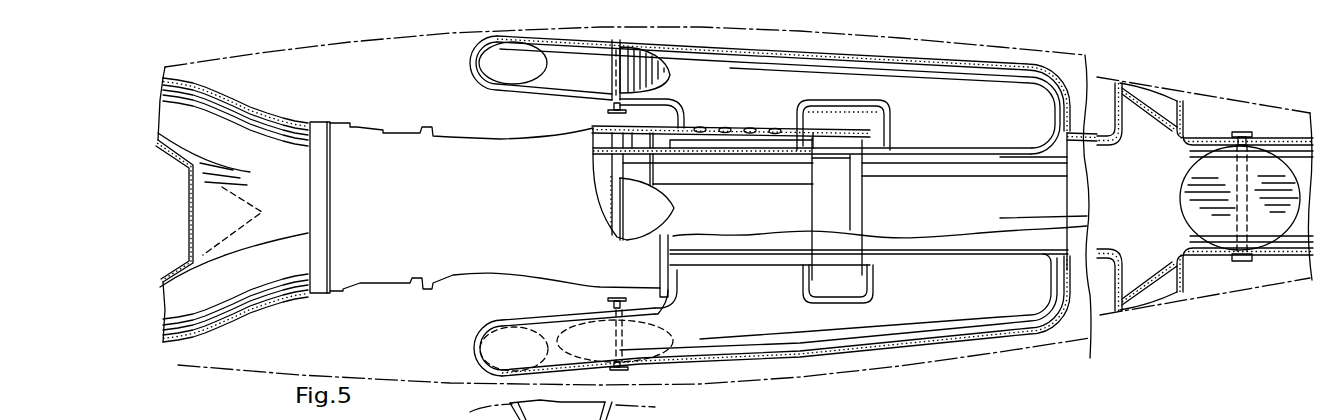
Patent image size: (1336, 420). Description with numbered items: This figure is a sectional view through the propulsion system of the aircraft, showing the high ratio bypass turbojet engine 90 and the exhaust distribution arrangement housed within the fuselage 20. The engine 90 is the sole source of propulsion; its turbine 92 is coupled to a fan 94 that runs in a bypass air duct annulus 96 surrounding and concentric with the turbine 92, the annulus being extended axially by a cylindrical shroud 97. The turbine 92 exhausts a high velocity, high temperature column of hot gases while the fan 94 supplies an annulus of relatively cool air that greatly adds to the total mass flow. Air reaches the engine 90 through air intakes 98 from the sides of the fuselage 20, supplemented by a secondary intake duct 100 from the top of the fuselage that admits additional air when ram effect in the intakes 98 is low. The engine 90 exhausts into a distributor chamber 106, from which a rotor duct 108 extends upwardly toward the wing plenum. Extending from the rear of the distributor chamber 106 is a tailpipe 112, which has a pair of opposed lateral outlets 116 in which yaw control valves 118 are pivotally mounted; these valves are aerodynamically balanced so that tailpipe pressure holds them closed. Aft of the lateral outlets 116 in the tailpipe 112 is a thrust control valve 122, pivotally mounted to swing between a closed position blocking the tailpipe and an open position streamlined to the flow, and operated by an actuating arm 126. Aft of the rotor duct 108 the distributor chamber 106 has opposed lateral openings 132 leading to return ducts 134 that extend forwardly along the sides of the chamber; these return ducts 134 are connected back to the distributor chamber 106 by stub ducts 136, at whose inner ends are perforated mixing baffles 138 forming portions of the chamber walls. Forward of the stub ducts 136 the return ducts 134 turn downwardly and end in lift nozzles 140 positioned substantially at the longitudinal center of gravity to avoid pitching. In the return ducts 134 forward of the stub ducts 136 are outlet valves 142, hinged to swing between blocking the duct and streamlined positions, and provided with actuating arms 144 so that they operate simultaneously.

The fuselage 20 is at (972, 40).
The high ratio bypass turbojet engine 90 is at (383, 283).
The turbine 92 is at (607, 168).
The fan 94 is at (602, 147).
The bypass air duct annulus 96 is at (660, 142).
The cylindrical shroud 97 is at (763, 156).
The air intakes 98 is at (210, 79).
The secondary intake duct 100 is at (190, 228).
The distributor chamber 106 is at (700, 145).
The rotor duct 108 is at (655, 407).
The tailpipe 112 is at (1265, 255).
The lateral outlets 116 is at (1168, 103).
The yaw control valves 118 is at (1168, 127).
The thrust control valve 122 is at (1190, 195).
The actuating arm 126 is at (1241, 131).
The opposed lateral openings 132 is at (1008, 153).
The return ducts 134 is at (880, 55).
The stub ducts 136 is at (676, 121).
The perforated mixing baffles 138 is at (742, 127).
The lift nozzles 140 is at (471, 65).
The outlet valves 142 is at (671, 75).
The actuating arms 144 is at (608, 108).